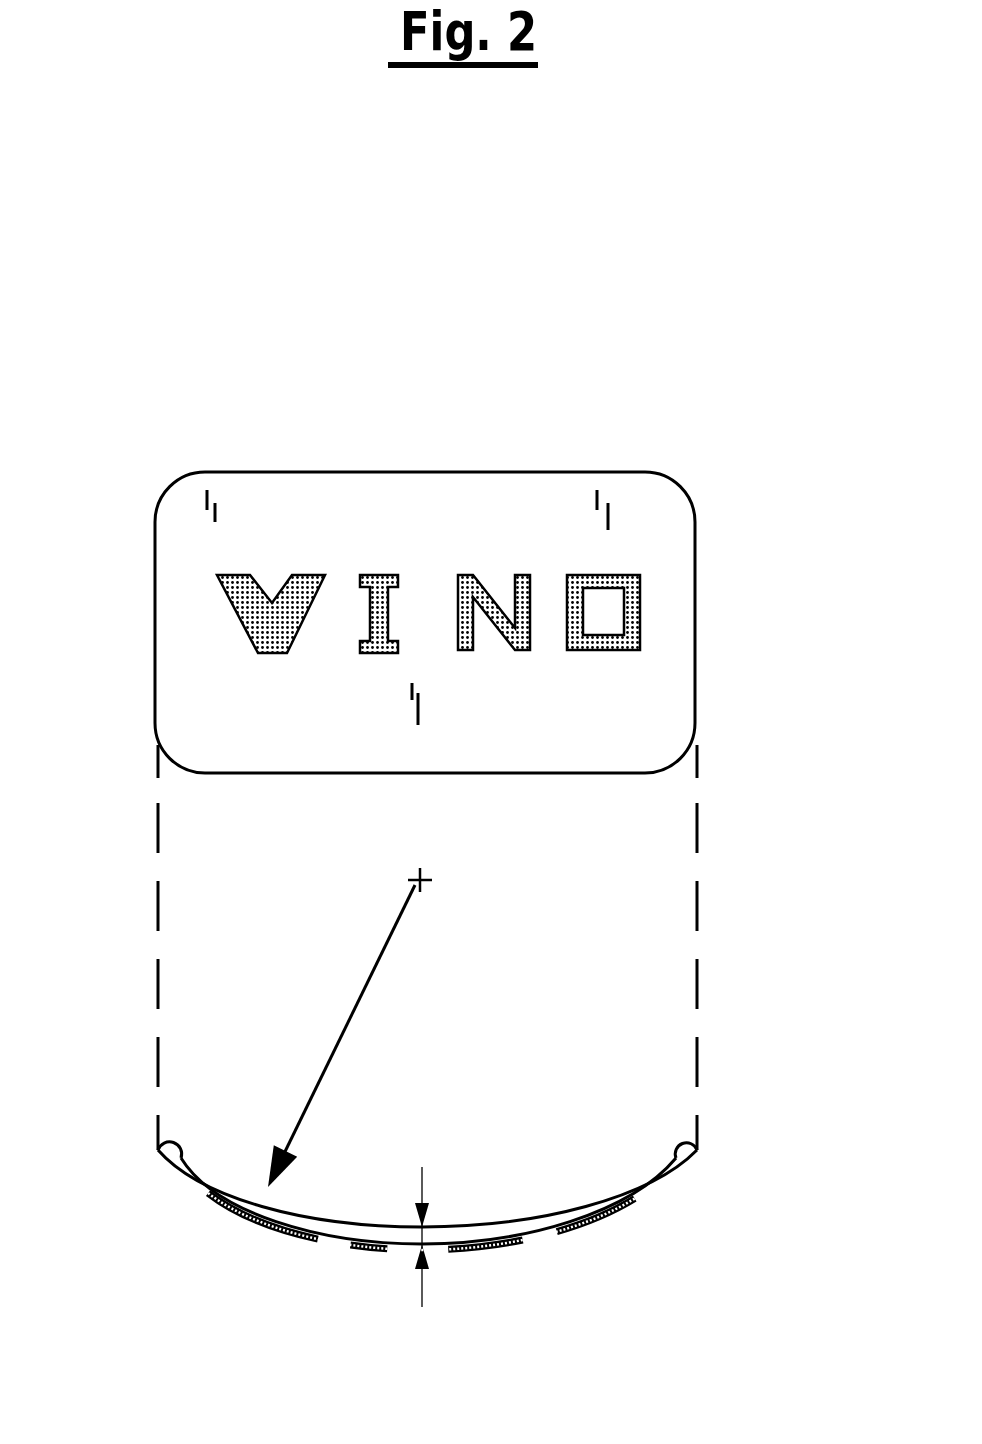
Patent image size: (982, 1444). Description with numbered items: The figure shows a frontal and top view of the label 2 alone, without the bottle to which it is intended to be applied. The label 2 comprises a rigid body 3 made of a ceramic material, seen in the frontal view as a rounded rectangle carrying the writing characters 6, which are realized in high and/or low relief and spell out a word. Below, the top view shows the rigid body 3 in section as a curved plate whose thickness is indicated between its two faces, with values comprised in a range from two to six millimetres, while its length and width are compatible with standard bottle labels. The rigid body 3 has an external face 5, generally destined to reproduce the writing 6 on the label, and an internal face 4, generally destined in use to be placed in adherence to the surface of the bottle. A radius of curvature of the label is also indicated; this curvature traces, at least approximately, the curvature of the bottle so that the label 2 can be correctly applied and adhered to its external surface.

The label 2 is at (665, 384).
The rigid body 3 is at (271, 510).
The internal face 4 is at (561, 1214).
The external face 5 is at (667, 1187).
The writing characters 6 is at (237, 613).